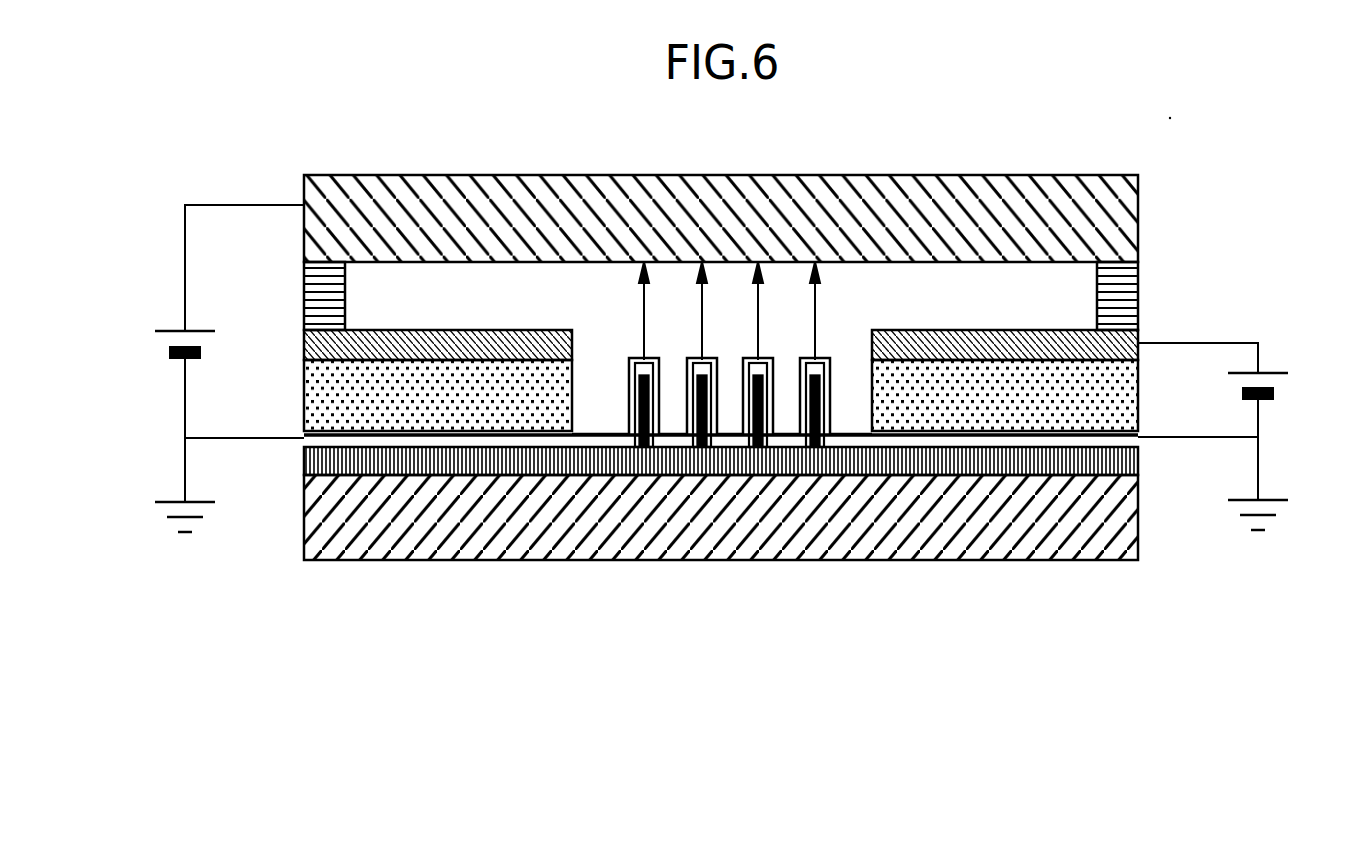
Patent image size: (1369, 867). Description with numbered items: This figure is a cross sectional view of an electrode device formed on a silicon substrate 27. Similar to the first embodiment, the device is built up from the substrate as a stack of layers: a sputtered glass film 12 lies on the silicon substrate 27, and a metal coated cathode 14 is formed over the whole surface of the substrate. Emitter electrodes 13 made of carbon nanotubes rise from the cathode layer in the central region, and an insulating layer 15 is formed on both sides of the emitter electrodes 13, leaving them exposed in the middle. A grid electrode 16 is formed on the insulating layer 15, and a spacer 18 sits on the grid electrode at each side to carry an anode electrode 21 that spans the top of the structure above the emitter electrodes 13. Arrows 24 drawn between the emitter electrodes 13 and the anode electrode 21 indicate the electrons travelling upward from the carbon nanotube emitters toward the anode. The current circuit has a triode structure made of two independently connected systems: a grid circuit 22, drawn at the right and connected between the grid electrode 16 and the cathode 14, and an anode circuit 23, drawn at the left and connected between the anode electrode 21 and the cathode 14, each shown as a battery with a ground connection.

The sputtered glass film 12 is at (1140, 460).
The emitter electrodes 13 is at (645, 473).
The metal coated cathode 14 is at (937, 440).
The insulating layer 15 is at (304, 395).
The grid electrode 16 is at (420, 358).
The spacer 18 is at (304, 292).
The anode electrode 21 is at (1140, 213).
The grid circuit 22 is at (1260, 472).
The anode circuit 23 is at (238, 205).
The emitted electrons 24 is at (815, 350).
The silicon substrate 27 is at (543, 560).